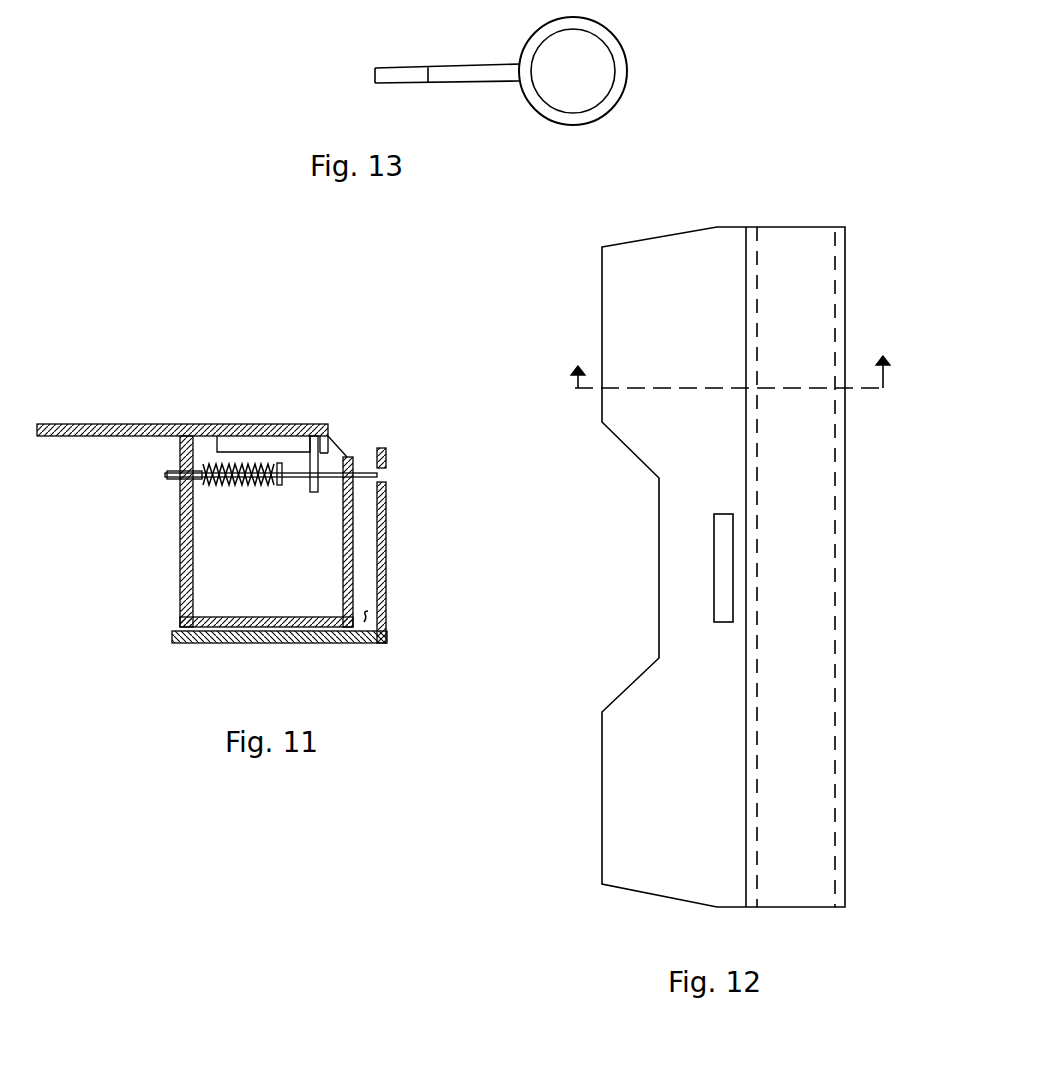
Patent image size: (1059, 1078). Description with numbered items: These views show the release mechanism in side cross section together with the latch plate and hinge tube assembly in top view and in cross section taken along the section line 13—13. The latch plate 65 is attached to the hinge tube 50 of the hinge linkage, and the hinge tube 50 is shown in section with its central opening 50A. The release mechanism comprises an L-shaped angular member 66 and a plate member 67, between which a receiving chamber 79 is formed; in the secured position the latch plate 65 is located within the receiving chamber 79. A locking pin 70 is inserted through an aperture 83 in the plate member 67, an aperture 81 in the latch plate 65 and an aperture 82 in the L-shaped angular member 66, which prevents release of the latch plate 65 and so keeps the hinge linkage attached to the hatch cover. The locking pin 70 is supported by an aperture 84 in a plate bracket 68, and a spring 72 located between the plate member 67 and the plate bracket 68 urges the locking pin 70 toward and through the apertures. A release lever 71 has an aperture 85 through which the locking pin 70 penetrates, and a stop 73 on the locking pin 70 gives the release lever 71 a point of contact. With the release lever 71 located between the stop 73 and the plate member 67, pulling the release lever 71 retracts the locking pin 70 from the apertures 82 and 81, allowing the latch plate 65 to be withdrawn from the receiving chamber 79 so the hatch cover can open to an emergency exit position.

In FIG. 13, the hinge tube 50 is at (620, 52).
In FIG. 12, the hinge tube 50 is at (838, 239).
In FIG. 13, the central opening of ring 50A is at (587, 76).
In FIG. 13, the latch plate 65 is at (403, 68).
In FIG. 12, the latch plate 65 is at (639, 252).
In FIG. 11, the release lever 71 is at (147, 427).
In FIG. 11, the spring 72 is at (182, 503).
In FIG. 11, the stop 73 is at (277, 482).
In FIG. 11, the L-shaped angular member 66 is at (387, 547).
In FIG. 11, the plate member 67 is at (355, 577).
In FIG. 11, the plate bracket 68 is at (182, 610).
In FIG. 11, the receiving chamber 79 is at (367, 643).
In FIG. 11, the aperture 83 is at (355, 468).
In FIG. 11, the locking pin 70 is at (365, 468).
In FIG. 11, the aperture 82 is at (388, 473).
In FIG. 11, the aperture 84 is at (178, 483).
In FIG. 11, the aperture 85 is at (308, 480).
In FIG. 12, the aperture 81 is at (726, 570).
In FIG. 12, the section line 13- 13 is at (729, 378).